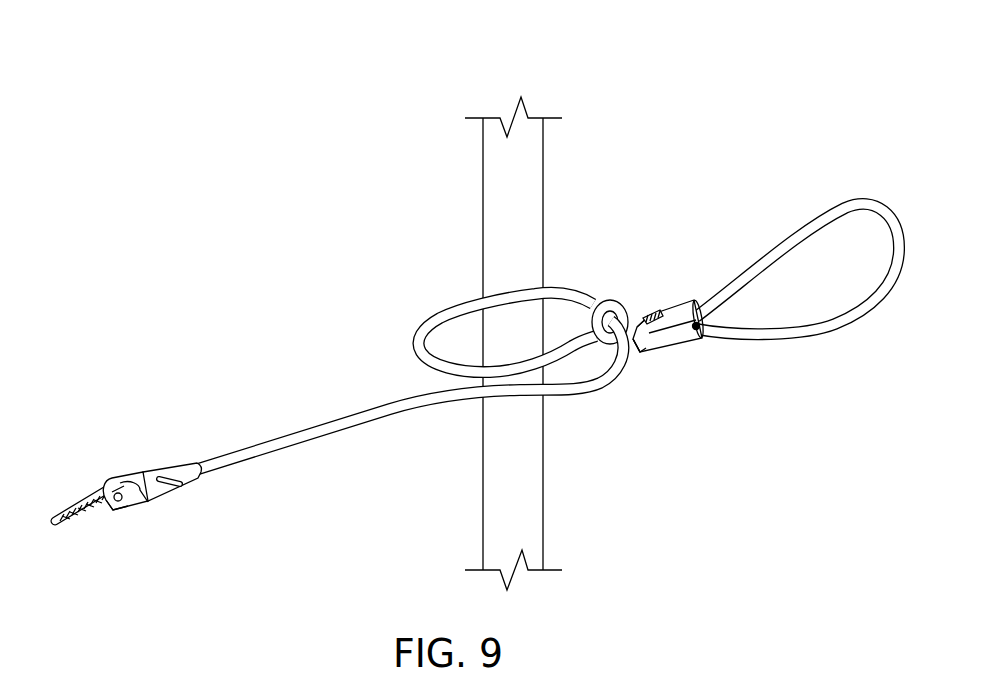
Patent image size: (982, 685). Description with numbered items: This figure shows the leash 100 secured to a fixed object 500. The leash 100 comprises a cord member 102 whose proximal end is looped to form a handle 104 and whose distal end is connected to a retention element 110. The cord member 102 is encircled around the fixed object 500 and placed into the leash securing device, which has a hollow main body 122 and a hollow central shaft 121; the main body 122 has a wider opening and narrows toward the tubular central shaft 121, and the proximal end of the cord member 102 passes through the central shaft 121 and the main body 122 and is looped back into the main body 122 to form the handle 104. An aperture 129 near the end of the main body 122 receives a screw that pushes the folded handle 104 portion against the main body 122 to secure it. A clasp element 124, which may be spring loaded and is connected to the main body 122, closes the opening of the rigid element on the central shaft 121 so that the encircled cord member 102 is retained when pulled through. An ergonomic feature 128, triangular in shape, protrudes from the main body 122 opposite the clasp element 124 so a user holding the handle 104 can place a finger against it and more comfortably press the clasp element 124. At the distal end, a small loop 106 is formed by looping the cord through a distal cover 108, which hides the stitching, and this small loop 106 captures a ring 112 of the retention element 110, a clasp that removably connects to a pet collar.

The leash 100 is at (458, 315).
The cord member 102 is at (418, 342).
The handle 104 is at (808, 201).
The small loop 106 is at (91, 496).
The distal cover 108 is at (171, 465).
The retention element 110 is at (75, 502).
The ring 112 is at (112, 512).
The central shaft 121 is at (613, 366).
The main body 122 is at (694, 327).
The clasp element 124 is at (644, 310).
The ergonomic feature 128 is at (644, 354).
The aperture 129 is at (701, 331).
The fixed object 500 is at (483, 173).